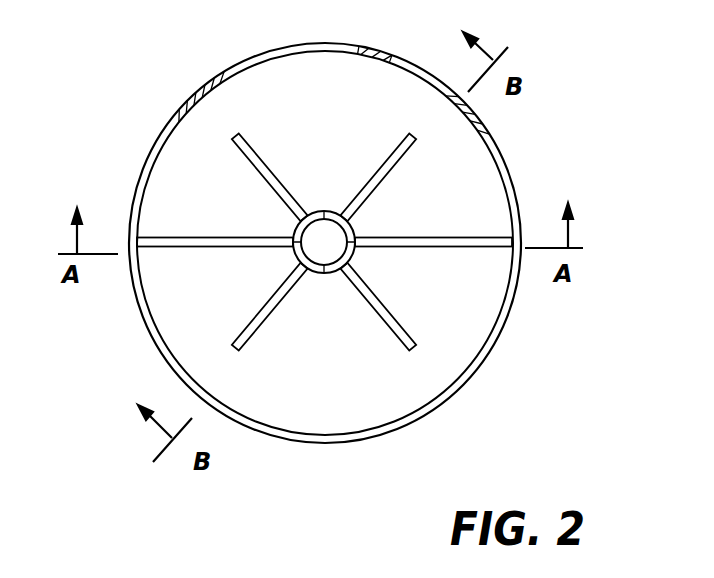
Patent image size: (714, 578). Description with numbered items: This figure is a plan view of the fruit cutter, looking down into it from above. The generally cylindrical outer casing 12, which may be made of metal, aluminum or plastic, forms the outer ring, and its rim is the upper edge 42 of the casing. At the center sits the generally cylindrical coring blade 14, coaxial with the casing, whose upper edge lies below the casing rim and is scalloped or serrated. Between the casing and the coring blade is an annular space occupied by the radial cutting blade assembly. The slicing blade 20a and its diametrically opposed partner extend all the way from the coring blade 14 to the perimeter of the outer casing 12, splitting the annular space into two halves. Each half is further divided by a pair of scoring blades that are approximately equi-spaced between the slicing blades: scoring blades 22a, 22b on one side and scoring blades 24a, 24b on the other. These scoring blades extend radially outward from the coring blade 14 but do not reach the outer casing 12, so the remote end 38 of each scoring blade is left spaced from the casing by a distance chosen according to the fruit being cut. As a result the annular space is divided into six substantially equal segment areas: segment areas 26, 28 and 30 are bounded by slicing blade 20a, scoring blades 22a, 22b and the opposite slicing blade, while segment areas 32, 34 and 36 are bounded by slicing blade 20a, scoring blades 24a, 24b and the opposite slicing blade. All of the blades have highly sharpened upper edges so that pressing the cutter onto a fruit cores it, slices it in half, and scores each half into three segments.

The outer casing 12 is at (167, 122).
The coring blade 14 is at (350, 253).
The slicing blade 20a is at (175, 237).
The scoring blade 22a is at (263, 157).
The scoring blade 22b is at (393, 150).
The scoring blade 24a is at (250, 338).
The scoring blade 24b is at (402, 343).
The segment area 26 is at (235, 206).
The segment area 28 is at (353, 178).
The segment area 30 is at (460, 201).
The segment area 32 is at (228, 297).
The segment area 34 is at (333, 329).
The segment area 36 is at (464, 308).
The remote end 38 is at (232, 128).
The upper edge of the outer casing 42 is at (270, 50).